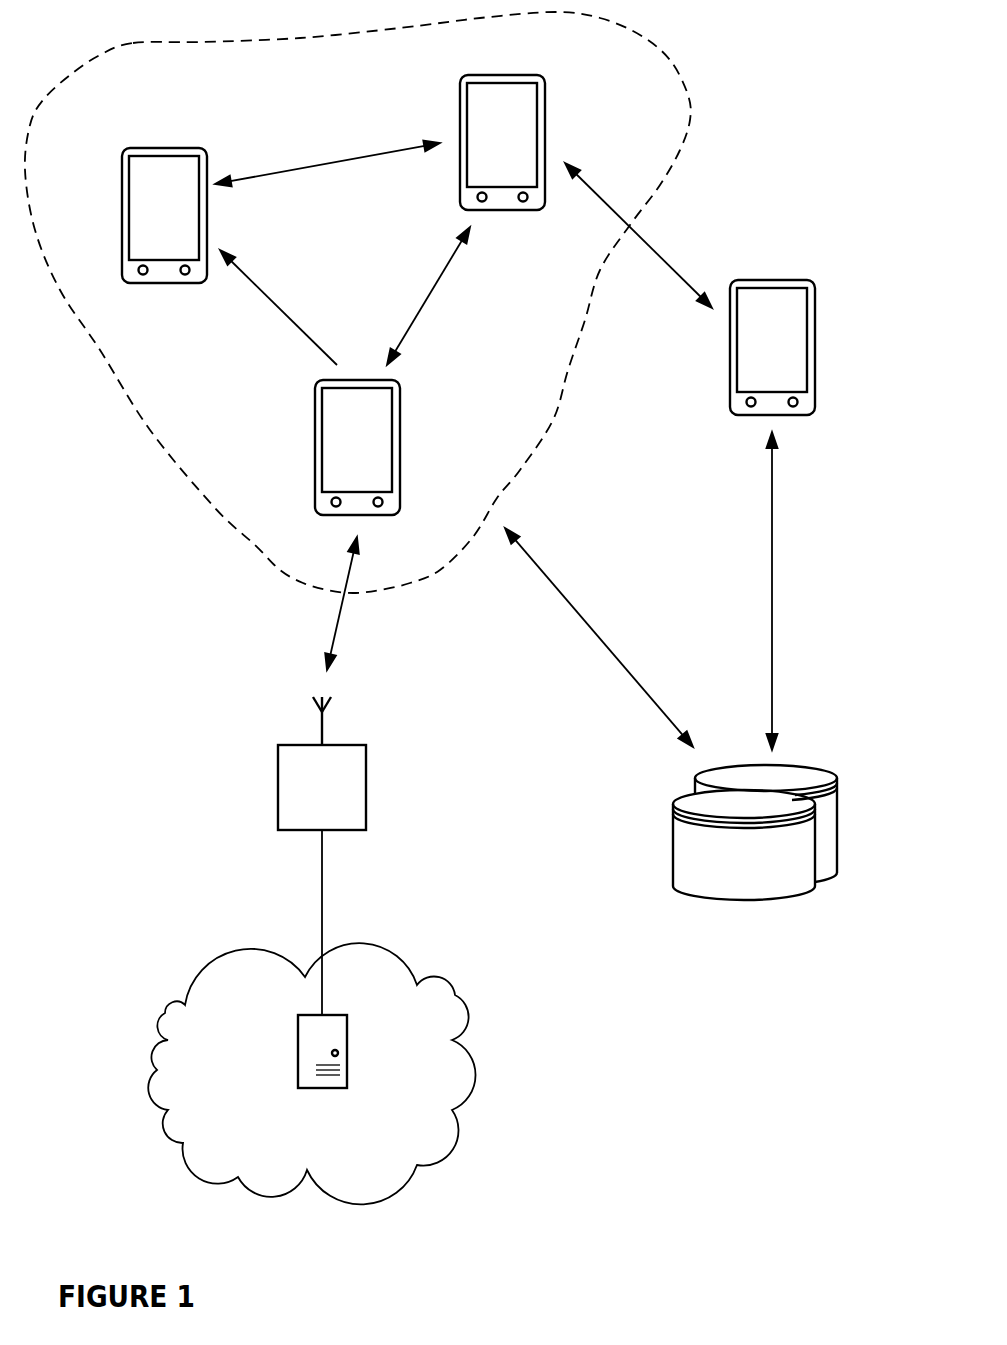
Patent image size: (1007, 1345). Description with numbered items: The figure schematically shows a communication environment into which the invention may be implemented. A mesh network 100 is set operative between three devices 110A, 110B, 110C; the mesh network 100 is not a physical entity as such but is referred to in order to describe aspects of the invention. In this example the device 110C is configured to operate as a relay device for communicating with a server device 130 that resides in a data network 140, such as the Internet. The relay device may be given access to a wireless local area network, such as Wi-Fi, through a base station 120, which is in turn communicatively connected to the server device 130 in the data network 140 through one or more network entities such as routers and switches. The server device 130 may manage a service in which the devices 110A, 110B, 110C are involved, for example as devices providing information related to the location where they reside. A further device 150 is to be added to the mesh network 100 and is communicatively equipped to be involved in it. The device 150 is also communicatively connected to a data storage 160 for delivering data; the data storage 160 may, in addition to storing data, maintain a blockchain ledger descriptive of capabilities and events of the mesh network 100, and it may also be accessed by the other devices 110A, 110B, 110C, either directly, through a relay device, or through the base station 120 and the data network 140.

The mesh network 100 is at (688, 95).
The device 110A is at (163, 147).
The device 110B is at (546, 108).
The device 110C is at (400, 455).
The base station 120 is at (366, 765).
The server device 130 is at (347, 1042).
The data network 140 is at (455, 990).
The device 150 is at (815, 315).
The data storage 160 is at (800, 767).